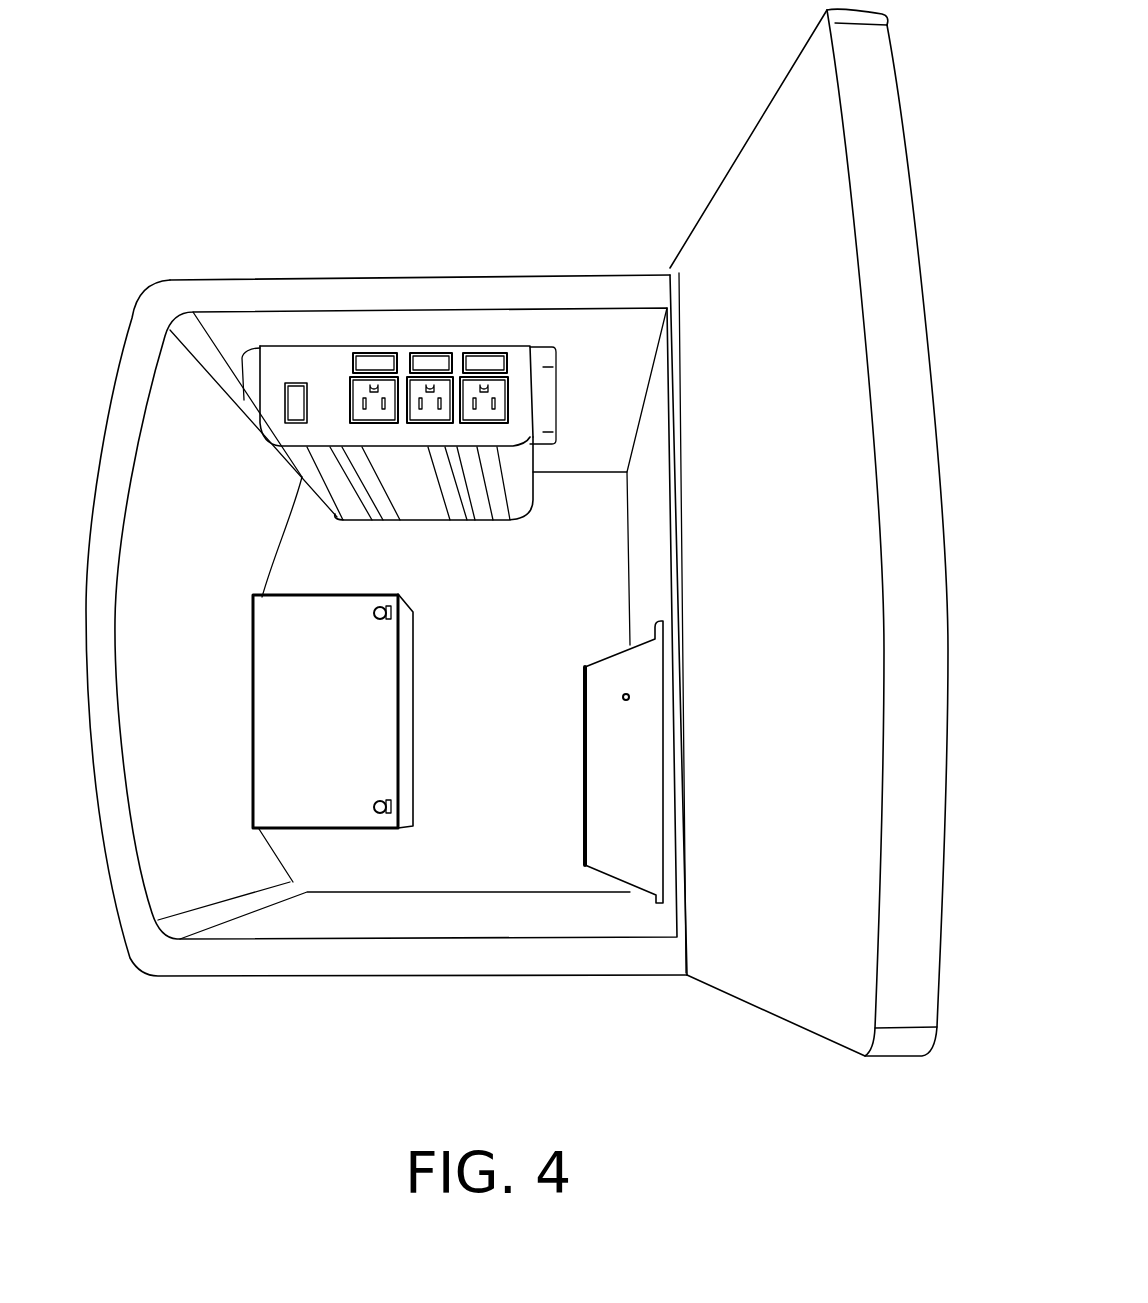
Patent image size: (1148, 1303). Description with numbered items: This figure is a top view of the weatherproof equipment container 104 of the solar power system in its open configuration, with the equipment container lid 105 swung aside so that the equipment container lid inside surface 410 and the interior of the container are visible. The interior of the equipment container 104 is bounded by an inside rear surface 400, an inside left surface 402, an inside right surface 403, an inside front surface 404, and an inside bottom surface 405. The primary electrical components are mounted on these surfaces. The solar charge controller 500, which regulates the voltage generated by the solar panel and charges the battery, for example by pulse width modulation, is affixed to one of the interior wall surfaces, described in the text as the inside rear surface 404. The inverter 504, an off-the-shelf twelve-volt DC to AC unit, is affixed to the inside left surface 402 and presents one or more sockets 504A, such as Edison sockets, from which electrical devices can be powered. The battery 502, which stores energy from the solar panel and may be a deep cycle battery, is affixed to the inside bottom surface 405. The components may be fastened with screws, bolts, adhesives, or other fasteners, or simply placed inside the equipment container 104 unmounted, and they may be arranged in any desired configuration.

The equipment container 104 is at (188, 292).
The equipment container lid 105 is at (915, 973).
The inside rear surface 400 is at (657, 460).
The inside left surface 402 is at (572, 333).
The inside right surface 403 is at (425, 905).
The inside front surface 404 is at (178, 803).
The inside bottom surface 405 is at (308, 557).
The equipment container lid inside surface 410 is at (780, 235).
The solar charge controller 500 is at (623, 833).
The battery 502 is at (330, 740).
The inverter 504 is at (322, 373).
The sockets 504A is at (472, 398).